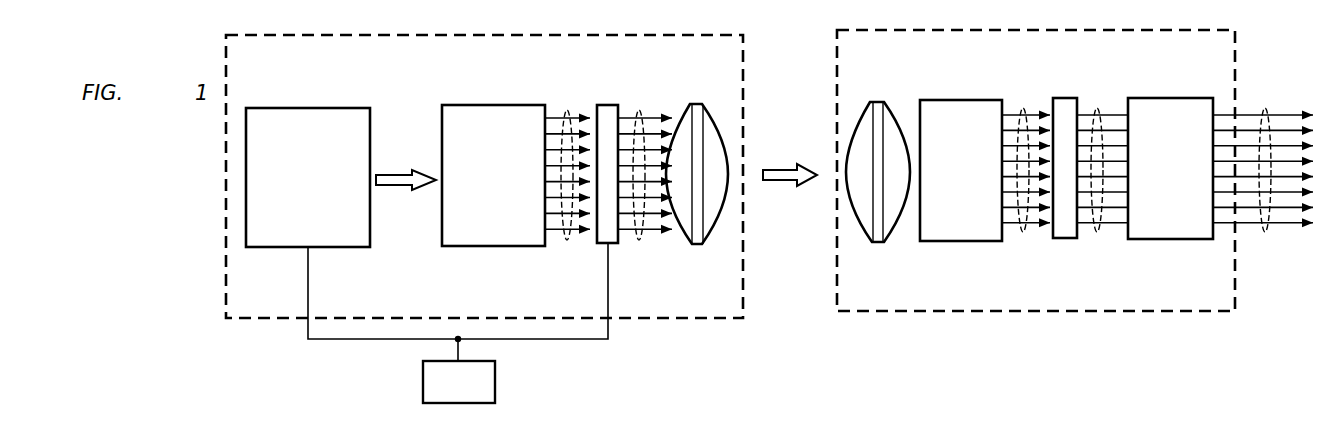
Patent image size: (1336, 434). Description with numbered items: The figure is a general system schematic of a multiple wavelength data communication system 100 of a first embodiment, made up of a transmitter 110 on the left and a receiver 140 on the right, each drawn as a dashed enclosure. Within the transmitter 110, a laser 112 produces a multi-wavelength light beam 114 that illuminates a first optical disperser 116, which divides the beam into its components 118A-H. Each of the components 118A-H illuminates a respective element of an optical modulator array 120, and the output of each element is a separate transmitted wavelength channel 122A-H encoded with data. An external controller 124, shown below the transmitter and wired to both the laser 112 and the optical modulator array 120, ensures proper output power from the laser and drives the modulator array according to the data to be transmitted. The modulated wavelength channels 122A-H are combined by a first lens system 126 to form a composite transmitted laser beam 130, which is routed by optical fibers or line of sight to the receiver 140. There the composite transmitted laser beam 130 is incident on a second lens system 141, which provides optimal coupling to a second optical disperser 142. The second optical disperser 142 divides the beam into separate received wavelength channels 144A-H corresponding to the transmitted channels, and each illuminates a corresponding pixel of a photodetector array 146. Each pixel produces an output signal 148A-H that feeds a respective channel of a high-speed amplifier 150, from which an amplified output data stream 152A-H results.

The multiple wavelength data communication system 100 is at (184, 161).
The transmitter 110 is at (677, 318).
The laser 112 is at (307, 108).
The multi-wavelength light beam 114 is at (395, 172).
The first optical disperser 116 is at (492, 105).
The components 118A-H is at (566, 242).
The optical modulator array 120 is at (608, 105).
The transmitted wavelength channels 122A-H is at (640, 242).
The external controller 124 is at (423, 382).
The first lens system 126 is at (697, 104).
The composite transmitted laser beam 130 is at (779, 167).
The receiver 140 is at (1076, 315).
The second lens system 141 is at (876, 102).
The second optical disperser 142 is at (958, 100).
The received wavelength channels 144A-H is at (1022, 238).
The photodetector array 146 is at (1065, 98).
The output signals 148A-H is at (1098, 238).
The high-speed amplifier 150 is at (1172, 98).
The amplified output data stream 152A-H is at (1266, 238).